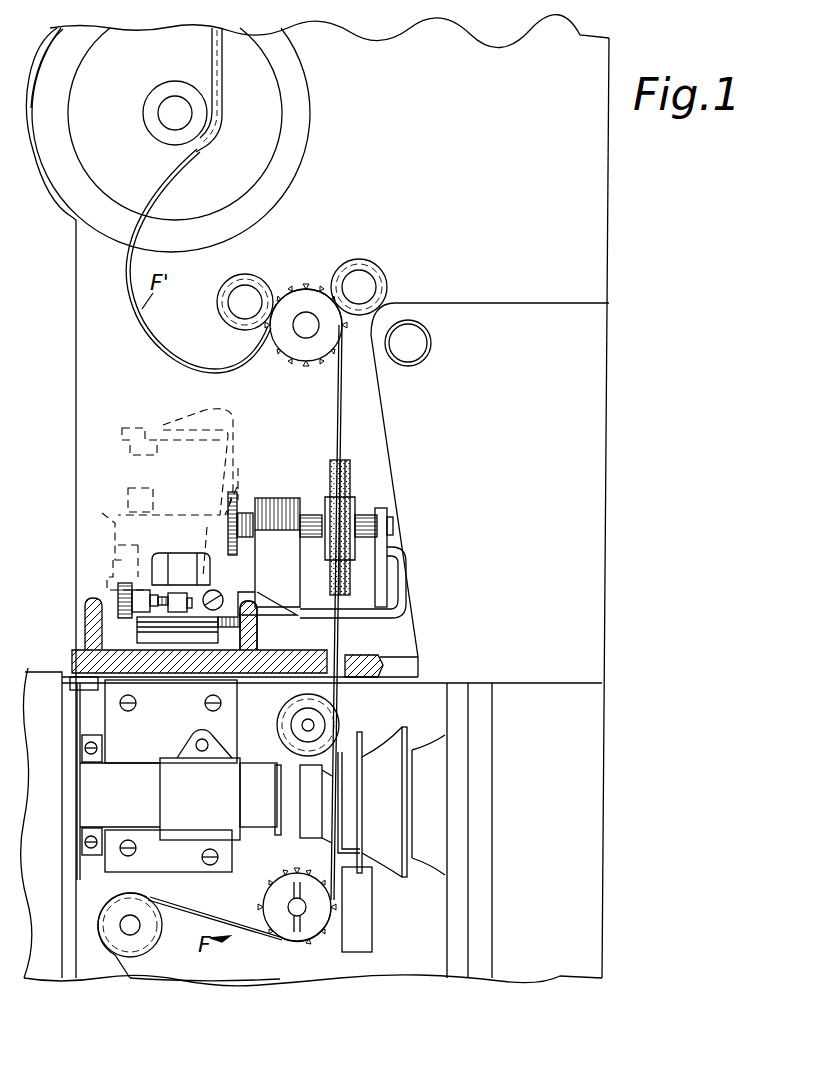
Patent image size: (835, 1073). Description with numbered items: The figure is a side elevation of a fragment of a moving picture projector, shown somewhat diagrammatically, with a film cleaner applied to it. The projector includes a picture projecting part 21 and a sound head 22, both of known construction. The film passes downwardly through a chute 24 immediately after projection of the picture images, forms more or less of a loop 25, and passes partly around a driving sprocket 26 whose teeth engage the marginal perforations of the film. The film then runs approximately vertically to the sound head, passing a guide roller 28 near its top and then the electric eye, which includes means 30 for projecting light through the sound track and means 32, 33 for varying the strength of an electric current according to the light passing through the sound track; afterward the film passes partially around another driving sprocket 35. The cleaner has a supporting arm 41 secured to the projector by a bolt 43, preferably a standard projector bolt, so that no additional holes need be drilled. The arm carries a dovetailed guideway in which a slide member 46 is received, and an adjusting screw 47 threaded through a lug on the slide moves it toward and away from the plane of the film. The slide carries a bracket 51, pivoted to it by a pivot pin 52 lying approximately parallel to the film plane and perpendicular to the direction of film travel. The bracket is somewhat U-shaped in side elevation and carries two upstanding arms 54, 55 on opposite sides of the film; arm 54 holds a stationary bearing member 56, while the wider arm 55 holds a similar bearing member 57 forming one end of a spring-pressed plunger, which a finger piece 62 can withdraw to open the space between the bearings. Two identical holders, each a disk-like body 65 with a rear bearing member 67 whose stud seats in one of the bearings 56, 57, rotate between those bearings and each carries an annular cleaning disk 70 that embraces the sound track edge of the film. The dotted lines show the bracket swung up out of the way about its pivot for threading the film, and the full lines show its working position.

The picture projecting part 21 is at (378, 34).
The sound head 22 is at (212, 973).
The chute 24 is at (221, 104).
The loop 25 is at (193, 364).
The driving sprocket 26 is at (307, 348).
The guide roller 28 is at (283, 706).
The light projecting means 30 is at (264, 823).
The current varying means 32 is at (375, 756).
The current varying means 33 is at (444, 741).
The driving sprocket 35 is at (288, 942).
The supporting arm 41 is at (142, 621).
The bolt 43 is at (163, 553).
The slide member 46 is at (253, 628).
The adjusting screw 47 is at (118, 593).
The bracket 51 is at (269, 556).
The pivot pin 52 is at (218, 592).
The upstanding arm 54 is at (163, 425).
The upstanding arm 55 is at (115, 523).
The stationary bearing member 56 is at (128, 443).
The bearing member 57 is at (154, 498).
The finger piece 62 is at (237, 496).
The disk-like body 65 is at (352, 488).
The bearing member 67 is at (358, 513).
The cleaning disk 70 is at (331, 463).